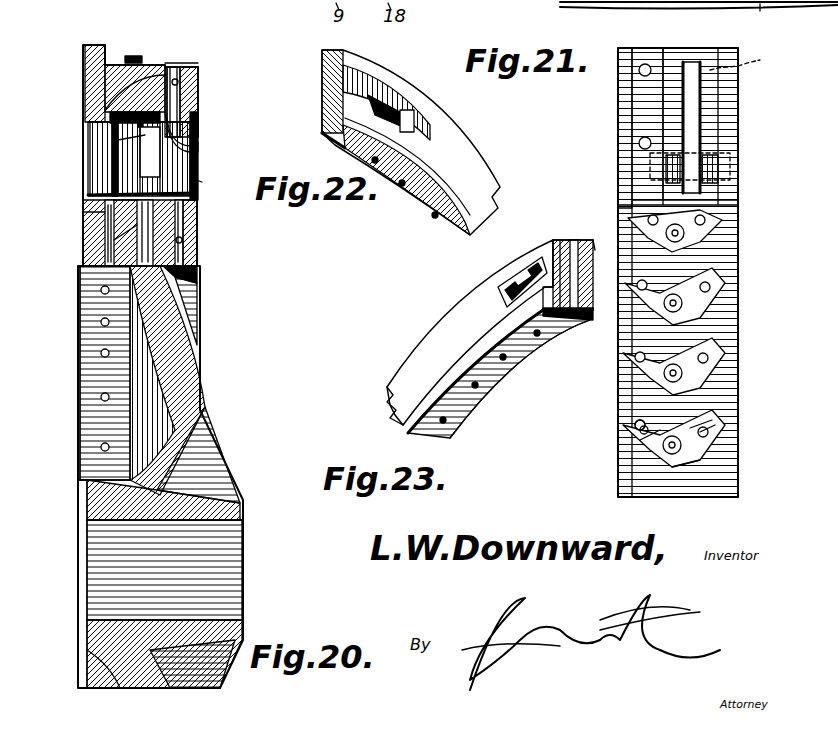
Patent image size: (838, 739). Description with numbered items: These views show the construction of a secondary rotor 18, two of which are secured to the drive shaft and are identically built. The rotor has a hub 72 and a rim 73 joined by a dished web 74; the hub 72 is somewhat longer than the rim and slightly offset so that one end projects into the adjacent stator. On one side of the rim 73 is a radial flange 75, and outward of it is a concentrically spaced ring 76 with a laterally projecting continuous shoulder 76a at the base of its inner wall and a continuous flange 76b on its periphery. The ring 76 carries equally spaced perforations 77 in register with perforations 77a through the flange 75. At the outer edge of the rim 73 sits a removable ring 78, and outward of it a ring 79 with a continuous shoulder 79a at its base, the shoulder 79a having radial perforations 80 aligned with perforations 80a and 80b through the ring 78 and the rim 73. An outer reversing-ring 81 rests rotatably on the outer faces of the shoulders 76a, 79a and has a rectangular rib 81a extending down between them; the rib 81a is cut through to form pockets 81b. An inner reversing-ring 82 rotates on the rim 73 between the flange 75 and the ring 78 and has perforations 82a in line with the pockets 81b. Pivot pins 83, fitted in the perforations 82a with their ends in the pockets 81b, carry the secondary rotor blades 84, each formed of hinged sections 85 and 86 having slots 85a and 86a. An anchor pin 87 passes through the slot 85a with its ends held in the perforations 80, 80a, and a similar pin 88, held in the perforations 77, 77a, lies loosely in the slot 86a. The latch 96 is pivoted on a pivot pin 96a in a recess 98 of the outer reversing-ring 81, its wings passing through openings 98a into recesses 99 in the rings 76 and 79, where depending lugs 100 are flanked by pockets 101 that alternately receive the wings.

In FIG. 20, the secondary rotor 18 is at (214, 384).
In FIG. 20, the hub 72 is at (243, 516).
In FIG. 20, the rim 73 is at (197, 283).
In FIG. 20, the dished web 74 is at (200, 320).
In FIG. 21, the dished web 74 is at (762, 13).
In FIG. 20, the radial flange 75 is at (190, 222).
In FIG. 21, the radial flange 75 is at (628, 490).
In FIG. 20, the ring 76 is at (198, 102).
In FIG. 23, the ring 76 is at (437, 340).
In FIG. 21, the ring 76 is at (632, 120).
In FIG. 20, the shoulder 76a is at (200, 143).
In FIG. 23, the shoulder 76a is at (478, 358).
In FIG. 20, the flange 76b is at (190, 66).
In FIG. 23, the flange 76b is at (575, 240).
In FIG. 21, the flange 76b is at (622, 158).
In FIG. 20, the perforations 77 is at (182, 75).
In FIG. 23, the perforations 77 is at (520, 350).
In FIG. 20, the perforations 77a is at (183, 240).
In FIG. 20, the removable ring 78 is at (95, 230).
In FIG. 21, the removable ring 78 is at (738, 258).
In FIG. 20, the ring 79 is at (85, 80).
In FIG. 22, the ring 79 is at (470, 170).
In FIG. 21, the ring 79 is at (718, 97).
In FIG. 22, the shoulder 79a is at (435, 190).
In FIG. 20, the radial perforations 80 is at (90, 128).
In FIG. 22, the radial perforations 80 is at (343, 150).
In FIG. 20, the perforations 80a is at (80, 270).
In FIG. 20, the perforations 80b is at (105, 300).
In FIG. 20, the outer reversing-ring 81 is at (150, 66).
In FIG. 21, the outer reversing-ring 81 is at (680, 60).
In FIG. 20, the rectangular rib 81a is at (190, 160).
In FIG. 20, the pockets 81b is at (135, 145).
In FIG. 20, the inner reversing-ring 82 is at (195, 255).
In FIG. 21, the inner reversing-ring 82 is at (722, 236).
In FIG. 20, the perforations 82a is at (120, 212).
In FIG. 20, the pivot pins 83 is at (165, 206).
In FIG. 21, the pivot pins 83 is at (700, 458).
In FIG. 20, the secondary rotor blades 84 is at (208, 185).
In FIG. 21, the secondary rotor blades 84 is at (722, 328).
In FIG. 20, the section 85 is at (117, 160).
In FIG. 21, the section 85 is at (738, 445).
In FIG. 21, the slot 85a is at (705, 430).
In FIG. 20, the section 86 is at (196, 145).
In FIG. 21, the section 86 is at (630, 425).
In FIG. 21, the slot 86a is at (650, 440).
In FIG. 20, the anchor pin 87 is at (100, 280).
In FIG. 21, the anchor pin 87 is at (705, 437).
In FIG. 20, the anchor pin 88 is at (184, 82).
In FIG. 21, the anchor pin 88 is at (640, 432).
In FIG. 20, the latch 96 is at (133, 56).
In FIG. 21, the latch 96 is at (718, 145).
In FIG. 21, the pivot pin 96a is at (752, 55).
In FIG. 21, the recess 98 is at (663, 92).
In FIG. 23, the openings 98a is at (596, 240).
In FIG. 21, the openings 98a is at (730, 145).
In FIG. 22, the recesses 99 is at (412, 122).
In FIG. 23, the recesses 99 is at (565, 323).
In FIG. 22, the depending lugs 100 is at (398, 108).
In FIG. 23, the depending lugs 100 is at (512, 280).
In FIG. 22, the pockets 101 is at (378, 90).
In FIG. 23, the pockets 101 is at (530, 258).